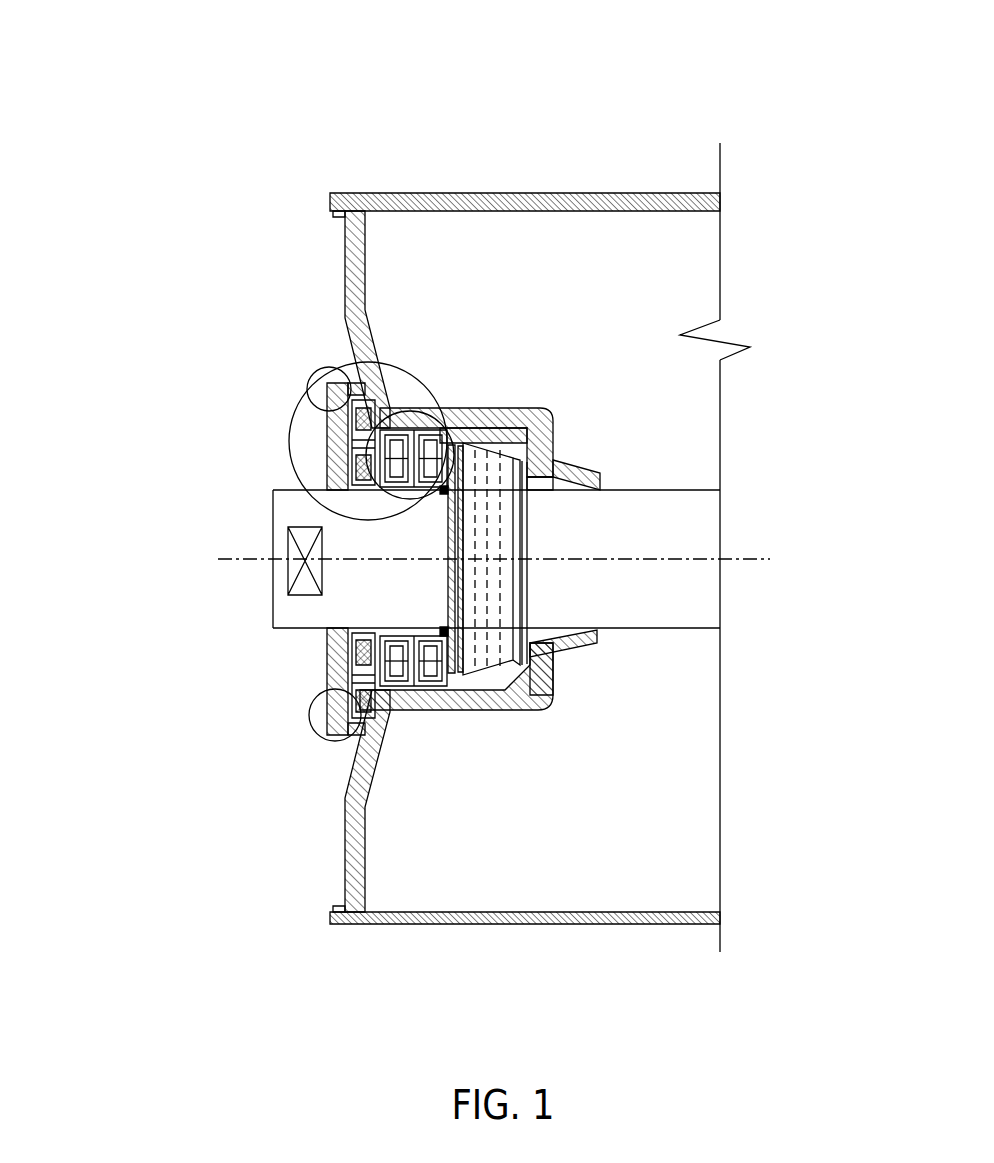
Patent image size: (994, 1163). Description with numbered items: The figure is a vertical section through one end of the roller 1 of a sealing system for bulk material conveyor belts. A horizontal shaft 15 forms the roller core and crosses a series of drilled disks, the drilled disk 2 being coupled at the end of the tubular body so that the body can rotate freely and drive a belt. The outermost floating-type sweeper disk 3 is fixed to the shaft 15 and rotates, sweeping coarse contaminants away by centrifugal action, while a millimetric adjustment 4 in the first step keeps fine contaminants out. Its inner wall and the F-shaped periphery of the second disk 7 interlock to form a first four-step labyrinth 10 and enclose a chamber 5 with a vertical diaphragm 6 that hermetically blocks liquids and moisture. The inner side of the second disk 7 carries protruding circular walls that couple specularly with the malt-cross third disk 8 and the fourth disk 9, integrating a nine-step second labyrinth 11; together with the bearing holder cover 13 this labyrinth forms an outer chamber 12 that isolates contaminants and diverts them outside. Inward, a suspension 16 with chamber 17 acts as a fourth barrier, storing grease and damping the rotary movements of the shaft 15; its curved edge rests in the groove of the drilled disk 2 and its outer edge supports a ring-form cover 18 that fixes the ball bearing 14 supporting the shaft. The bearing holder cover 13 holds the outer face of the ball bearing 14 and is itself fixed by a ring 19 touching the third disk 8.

The roller 1 is at (497, 192).
The drilled disk 2 is at (345, 264).
The floating-type sweeper disk 3 is at (327, 438).
The millimetric adjustment 4 is at (307, 380).
The chamber 5 is at (327, 453).
The vertical diaphragm 6 is at (353, 637).
The second disk 7 is at (390, 407).
The third disk 8 is at (377, 490).
The fourth disk 9 is at (447, 408).
The first four-step labyrinth 10 is at (313, 708).
The second labyrinth 11 is at (431, 422).
The chamber 12 is at (453, 710).
The bearing holder cover 13 is at (447, 577).
The ball bearing 14 is at (500, 532).
The shaft 15 is at (695, 617).
The suspension 16 is at (572, 463).
The chamber 17 is at (547, 482).
The cover 18 is at (549, 676).
The ring 19 is at (520, 713).